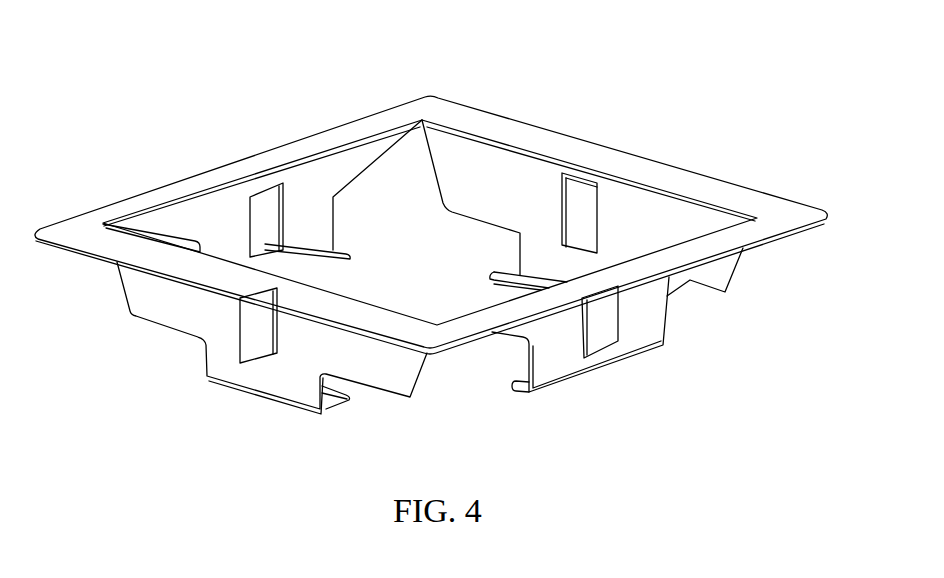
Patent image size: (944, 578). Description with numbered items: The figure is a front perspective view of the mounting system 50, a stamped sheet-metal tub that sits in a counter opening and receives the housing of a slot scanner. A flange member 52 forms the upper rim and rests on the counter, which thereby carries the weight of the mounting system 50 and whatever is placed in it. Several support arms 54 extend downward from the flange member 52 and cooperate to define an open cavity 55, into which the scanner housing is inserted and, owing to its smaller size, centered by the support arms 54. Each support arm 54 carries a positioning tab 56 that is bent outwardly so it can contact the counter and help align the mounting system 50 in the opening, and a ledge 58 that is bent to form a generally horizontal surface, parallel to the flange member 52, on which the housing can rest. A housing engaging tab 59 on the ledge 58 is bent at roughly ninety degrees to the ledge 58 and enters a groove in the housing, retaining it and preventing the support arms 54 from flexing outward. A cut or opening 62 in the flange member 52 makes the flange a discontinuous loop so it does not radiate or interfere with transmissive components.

The mounting system 50 is at (125, 128).
The flange member 52 is at (190, 185).
The support arms 54 is at (317, 186).
The open cavity 55 is at (475, 252).
The positioning tab 56 is at (265, 200).
The ledge 58 is at (350, 252).
The housing engaging tab 59 is at (492, 283).
The cut or opening 62 is at (797, 233).